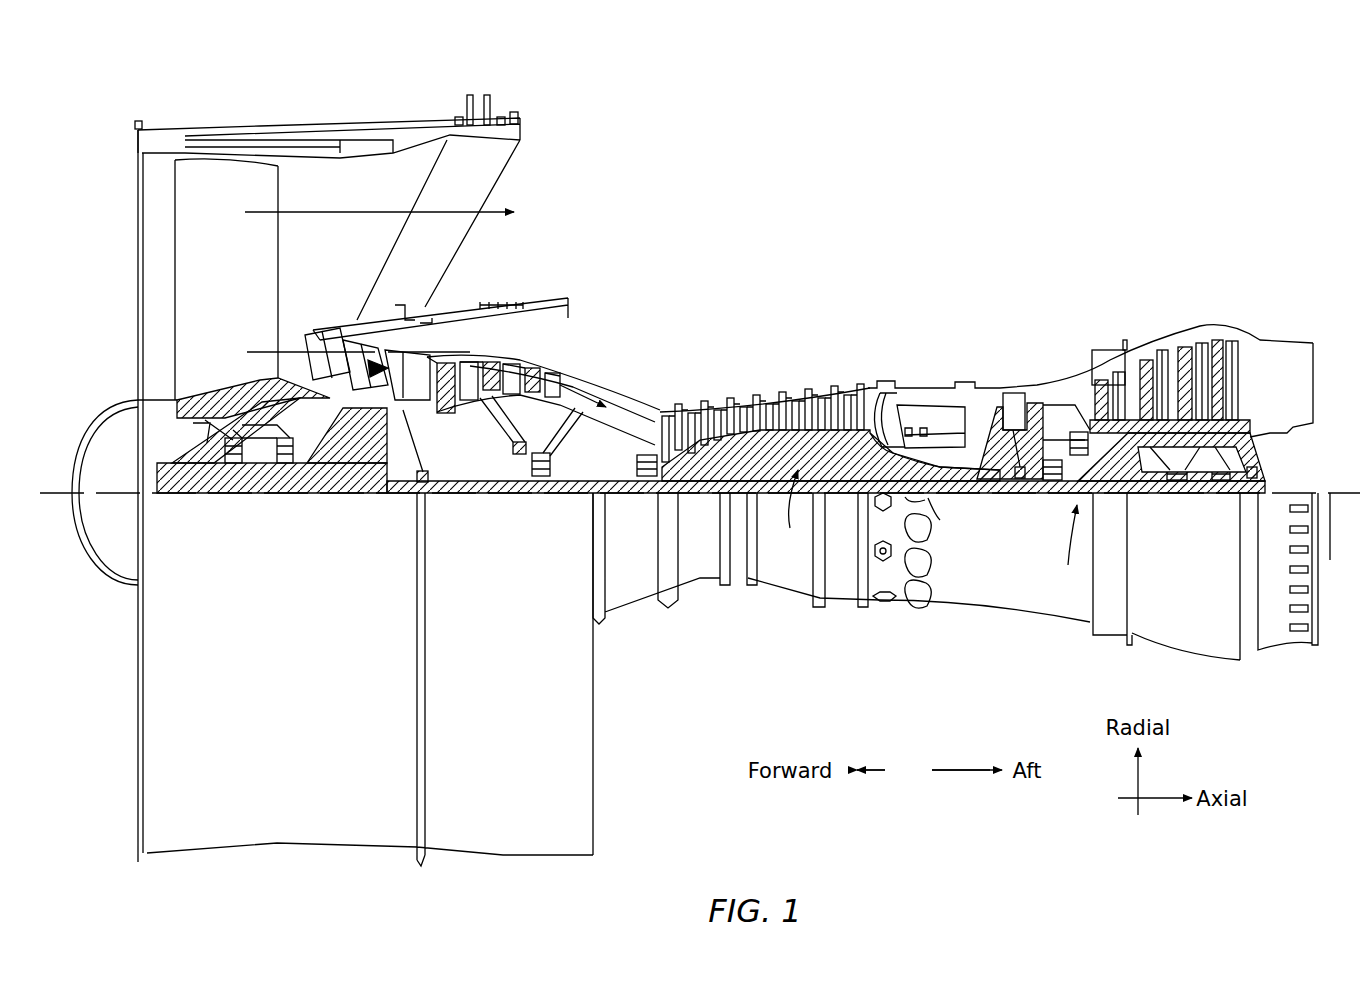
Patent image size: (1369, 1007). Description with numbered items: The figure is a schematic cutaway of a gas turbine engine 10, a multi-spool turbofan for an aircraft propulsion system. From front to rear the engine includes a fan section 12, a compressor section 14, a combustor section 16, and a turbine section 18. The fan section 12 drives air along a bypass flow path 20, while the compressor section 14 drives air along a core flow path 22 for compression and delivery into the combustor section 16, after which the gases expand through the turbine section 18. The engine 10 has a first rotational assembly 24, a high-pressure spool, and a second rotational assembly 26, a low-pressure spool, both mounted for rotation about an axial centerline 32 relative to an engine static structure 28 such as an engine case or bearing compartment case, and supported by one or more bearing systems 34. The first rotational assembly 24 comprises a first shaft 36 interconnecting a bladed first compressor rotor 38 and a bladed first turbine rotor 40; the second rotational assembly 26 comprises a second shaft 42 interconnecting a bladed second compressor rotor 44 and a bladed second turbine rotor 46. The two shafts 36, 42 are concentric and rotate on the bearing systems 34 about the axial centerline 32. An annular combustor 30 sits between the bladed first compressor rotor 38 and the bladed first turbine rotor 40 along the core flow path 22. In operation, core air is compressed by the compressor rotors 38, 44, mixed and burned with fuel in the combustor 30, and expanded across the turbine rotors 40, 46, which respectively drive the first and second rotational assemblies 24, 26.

The gas turbine engine 10 is at (1170, 190).
The fan section 12 is at (418, 107).
The compressor section 14 is at (427, 263).
The combustor section 16 is at (867, 263).
The turbine section 18 is at (1250, 263).
The bypass flow path 20 is at (497, 207).
The core flow path 22 is at (598, 382).
The first rotational assembly 24 is at (831, 493).
The second rotational assembly 26 is at (1159, 513).
The engine static structure 28 is at (1060, 385).
The annular combustor 30 is at (930, 412).
The axial centerline 32 is at (183, 500).
The bearing systems 34 is at (288, 480).
The first shaft 36 is at (922, 494).
The bladed first compressor rotor 38 is at (770, 410).
The bladed first turbine rotor 40 is at (995, 440).
The second shaft 42 is at (984, 500).
The bladed second compressor rotor 44 is at (490, 370).
The bladed second turbine rotor 46 is at (1174, 398).